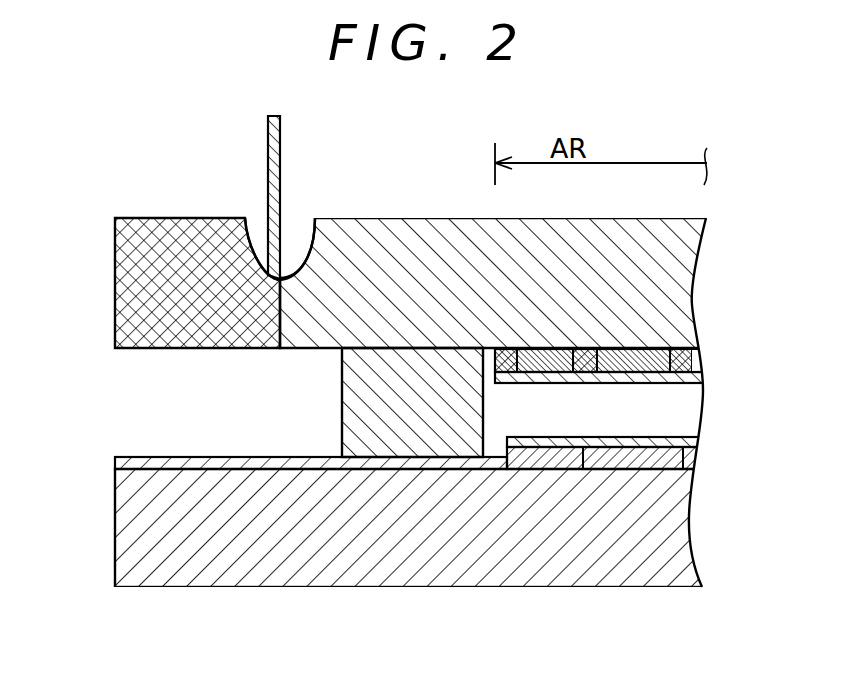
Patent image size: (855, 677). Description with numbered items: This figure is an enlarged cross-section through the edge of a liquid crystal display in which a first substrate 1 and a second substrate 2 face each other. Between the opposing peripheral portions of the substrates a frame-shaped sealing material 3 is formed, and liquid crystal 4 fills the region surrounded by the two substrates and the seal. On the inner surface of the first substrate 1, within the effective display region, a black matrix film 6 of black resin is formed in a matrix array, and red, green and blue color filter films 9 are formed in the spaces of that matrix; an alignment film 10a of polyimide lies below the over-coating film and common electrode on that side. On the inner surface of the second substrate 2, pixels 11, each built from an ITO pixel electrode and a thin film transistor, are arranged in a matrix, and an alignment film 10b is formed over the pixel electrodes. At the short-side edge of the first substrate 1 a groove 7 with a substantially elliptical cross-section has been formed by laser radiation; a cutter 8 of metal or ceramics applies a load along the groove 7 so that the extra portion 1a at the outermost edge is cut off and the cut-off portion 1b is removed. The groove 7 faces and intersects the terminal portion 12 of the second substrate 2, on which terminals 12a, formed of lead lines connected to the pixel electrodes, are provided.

The first substrate 1 is at (370, 230).
The extra portion 1a is at (280, 350).
The cut-off portion 1b is at (120, 272).
The second substrate 2 is at (359, 575).
The sealing material 3 is at (403, 387).
The liquid crystal 4 is at (685, 415).
The black matrix film 6 is at (663, 287).
The groove 7 is at (257, 228).
The cutter 8 is at (267, 150).
The color filter films 9 is at (696, 322).
The alignment film 10a is at (697, 378).
The alignment film 10b is at (695, 442).
The pixels 11 is at (650, 467).
The terminal portion 12 is at (375, 513).
The terminals 12a is at (113, 472).